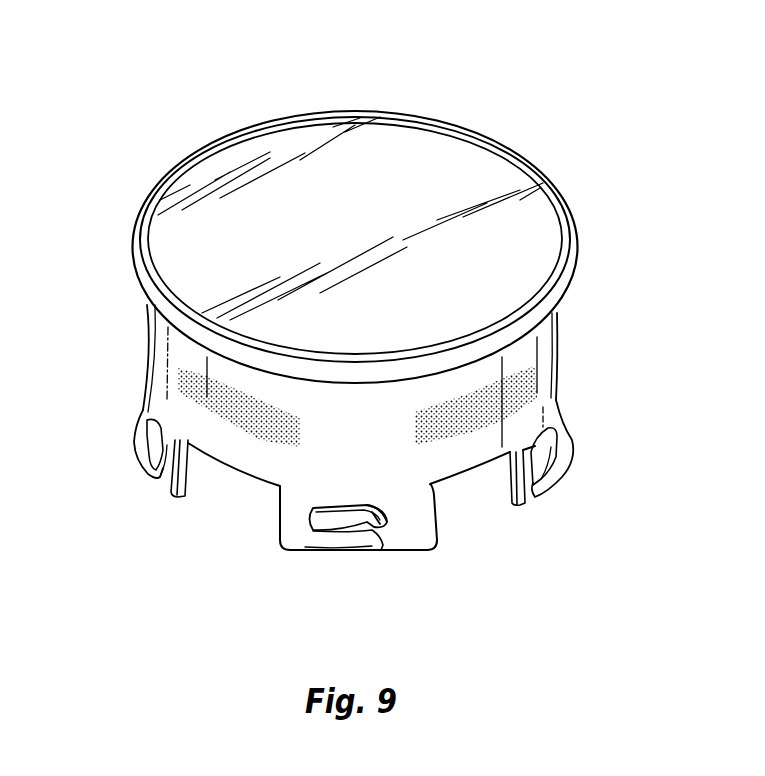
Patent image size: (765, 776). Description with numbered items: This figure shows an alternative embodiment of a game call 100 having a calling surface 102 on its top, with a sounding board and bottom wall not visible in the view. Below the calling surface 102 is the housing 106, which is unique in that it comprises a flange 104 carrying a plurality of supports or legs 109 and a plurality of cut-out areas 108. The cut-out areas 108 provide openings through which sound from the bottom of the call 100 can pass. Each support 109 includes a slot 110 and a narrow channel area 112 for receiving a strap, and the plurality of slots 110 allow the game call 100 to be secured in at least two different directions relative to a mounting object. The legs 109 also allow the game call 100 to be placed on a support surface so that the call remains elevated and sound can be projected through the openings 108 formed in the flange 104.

The game call 100 is at (352, 346).
The calling surface 102 is at (369, 239).
The flange 104 is at (370, 473).
The housing 106 is at (190, 392).
The cut-out areas 108 is at (187, 484).
The supports or legs 109 is at (167, 477).
The slot 110 is at (343, 517).
The narrow channel area 112 is at (376, 537).